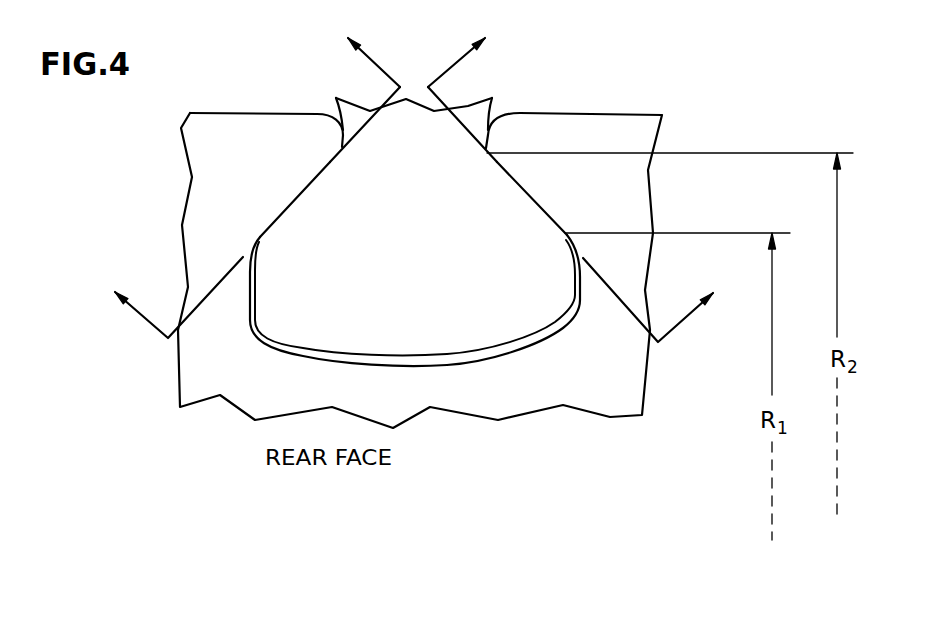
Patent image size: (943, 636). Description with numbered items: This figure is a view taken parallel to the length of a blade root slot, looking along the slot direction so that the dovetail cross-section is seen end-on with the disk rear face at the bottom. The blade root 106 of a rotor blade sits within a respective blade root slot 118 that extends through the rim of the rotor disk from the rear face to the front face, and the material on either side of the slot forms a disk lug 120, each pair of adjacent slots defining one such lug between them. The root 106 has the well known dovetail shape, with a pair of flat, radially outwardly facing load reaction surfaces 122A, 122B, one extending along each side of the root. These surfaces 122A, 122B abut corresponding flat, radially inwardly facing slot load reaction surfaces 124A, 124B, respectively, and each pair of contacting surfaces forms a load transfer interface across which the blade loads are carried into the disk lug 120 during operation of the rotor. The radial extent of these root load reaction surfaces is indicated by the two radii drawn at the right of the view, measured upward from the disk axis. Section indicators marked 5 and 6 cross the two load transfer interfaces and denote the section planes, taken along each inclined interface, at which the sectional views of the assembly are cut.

The disk lug 120 is at (608, 130).
The load reaction surface 122A is at (327, 171).
The load reaction surface 122B is at (513, 177).
The slot load reaction surface 124A is at (288, 213).
The slot load reaction surface 124B is at (543, 215).
The root 106 is at (508, 350).
The blade root slot 118 is at (302, 357).
The section line 5- 5 is at (248, 172).
The section line 6- 6 is at (583, 175).